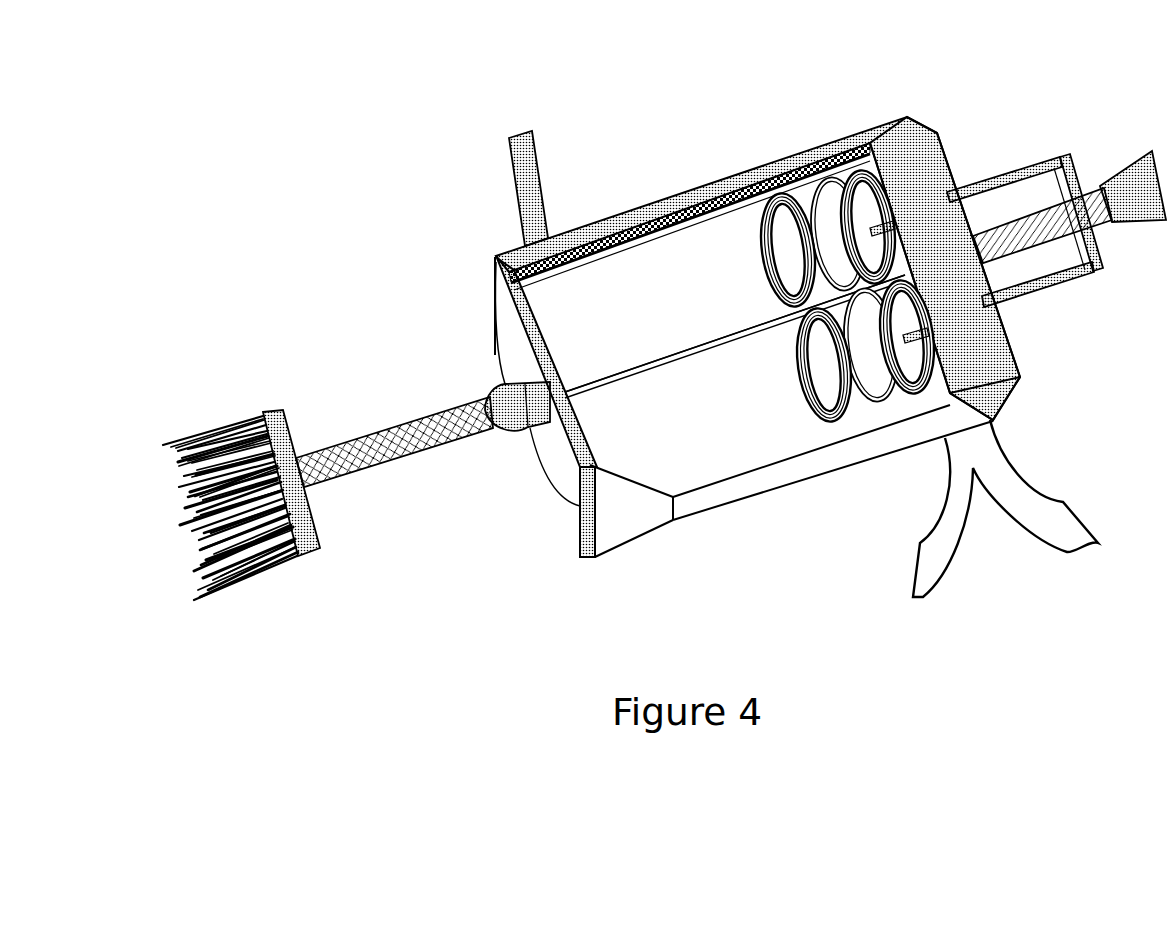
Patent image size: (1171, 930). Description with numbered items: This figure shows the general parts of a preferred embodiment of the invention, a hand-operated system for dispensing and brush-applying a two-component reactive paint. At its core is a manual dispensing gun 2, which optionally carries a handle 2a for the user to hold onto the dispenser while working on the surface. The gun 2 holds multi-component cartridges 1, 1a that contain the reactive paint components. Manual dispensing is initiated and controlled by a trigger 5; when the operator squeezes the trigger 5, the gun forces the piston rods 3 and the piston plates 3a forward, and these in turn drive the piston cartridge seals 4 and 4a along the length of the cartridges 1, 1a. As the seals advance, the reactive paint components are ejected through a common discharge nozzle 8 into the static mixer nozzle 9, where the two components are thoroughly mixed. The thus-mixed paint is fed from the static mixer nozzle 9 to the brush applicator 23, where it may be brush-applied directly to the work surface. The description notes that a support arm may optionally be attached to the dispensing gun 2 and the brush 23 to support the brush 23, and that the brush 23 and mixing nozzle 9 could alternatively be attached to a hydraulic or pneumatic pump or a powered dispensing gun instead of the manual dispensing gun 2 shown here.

The multi-component cartridge 1 is at (588, 300).
The multi-component cartridge 1a is at (625, 432).
The manual dispensing gun 2 is at (917, 142).
The handle 2a is at (512, 180).
The piston rod 3 is at (1046, 286).
The piston plate 3a is at (855, 182).
The piston cartridge seal 4 is at (795, 367).
The piston cartridge seal 4a is at (773, 193).
The trigger 5 is at (960, 560).
The common discharge nozzle 8 is at (542, 434).
The static mixer nozzle 9 is at (373, 430).
The brush applicator 23 is at (243, 586).